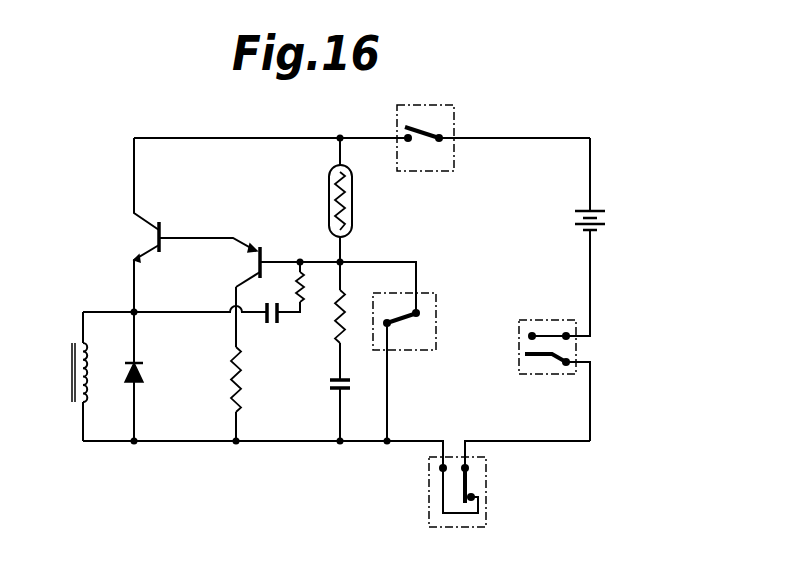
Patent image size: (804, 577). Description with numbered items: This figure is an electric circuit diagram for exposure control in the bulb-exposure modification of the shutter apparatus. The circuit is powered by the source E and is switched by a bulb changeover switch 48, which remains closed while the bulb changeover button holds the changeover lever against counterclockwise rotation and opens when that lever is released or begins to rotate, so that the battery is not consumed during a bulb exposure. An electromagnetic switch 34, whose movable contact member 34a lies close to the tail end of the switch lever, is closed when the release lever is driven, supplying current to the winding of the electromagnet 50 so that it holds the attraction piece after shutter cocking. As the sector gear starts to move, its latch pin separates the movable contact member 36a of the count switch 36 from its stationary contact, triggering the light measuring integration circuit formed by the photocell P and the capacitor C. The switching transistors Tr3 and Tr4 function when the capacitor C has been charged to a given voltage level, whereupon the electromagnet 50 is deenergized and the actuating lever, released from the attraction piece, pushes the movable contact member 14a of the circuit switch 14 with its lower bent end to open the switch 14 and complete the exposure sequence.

The bulb changeover switch 48 is at (455, 109).
The photocell P is at (352, 201).
The battery power source E is at (597, 224).
The switching transistor Tr4 is at (161, 228).
The switching transistor Tr3 is at (262, 253).
The count switch 36 is at (413, 351).
The movable contact member 36a is at (418, 318).
The electromagnetic switch 34 is at (553, 320).
The movable contact member 34a is at (539, 358).
The circuit switch 14 is at (429, 505).
The movable contact member 14a is at (468, 481).
The capacitor C is at (337, 391).
The electromagnet 50 is at (71, 376).